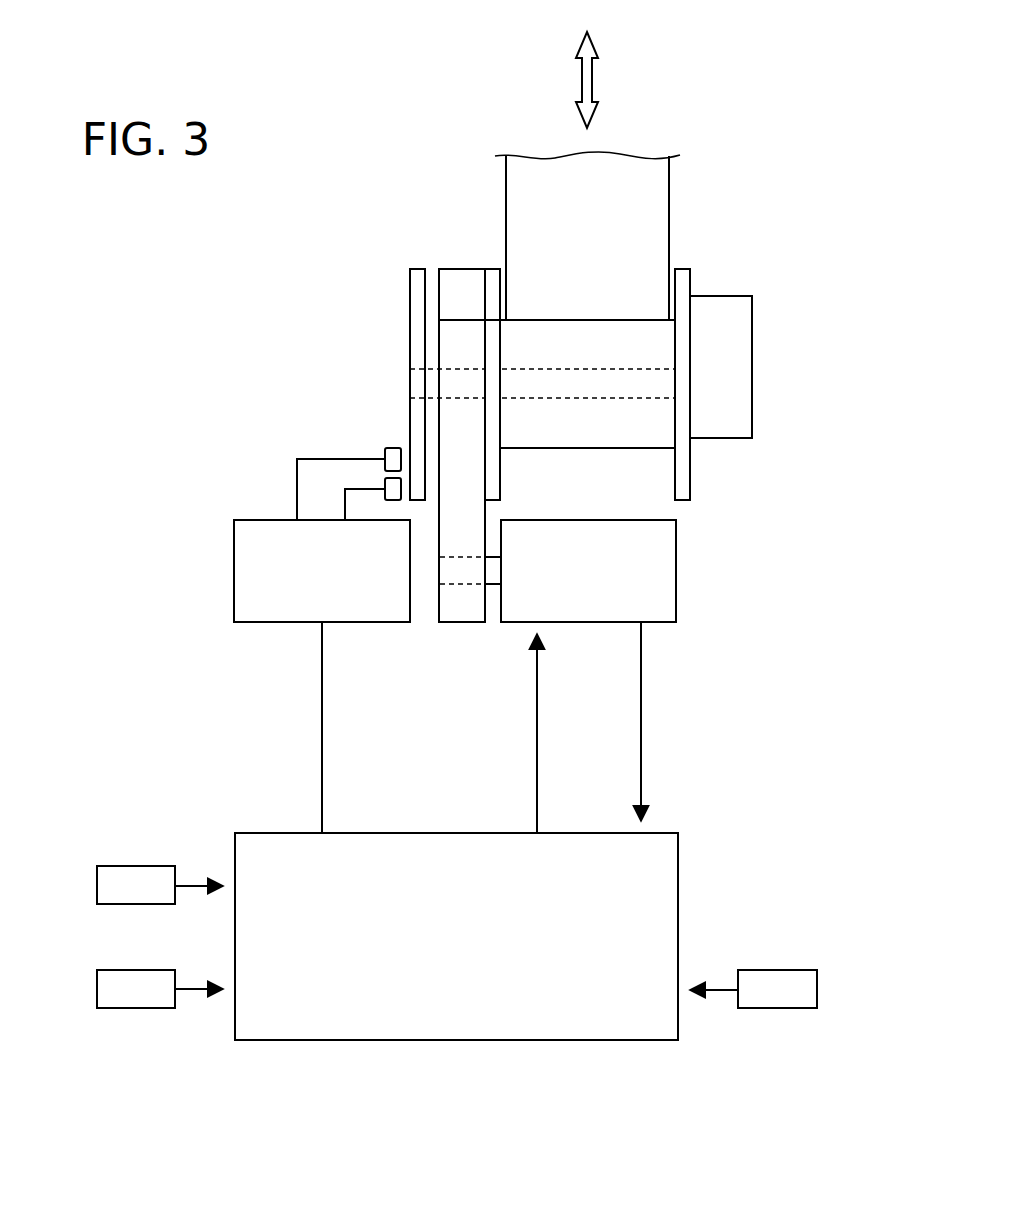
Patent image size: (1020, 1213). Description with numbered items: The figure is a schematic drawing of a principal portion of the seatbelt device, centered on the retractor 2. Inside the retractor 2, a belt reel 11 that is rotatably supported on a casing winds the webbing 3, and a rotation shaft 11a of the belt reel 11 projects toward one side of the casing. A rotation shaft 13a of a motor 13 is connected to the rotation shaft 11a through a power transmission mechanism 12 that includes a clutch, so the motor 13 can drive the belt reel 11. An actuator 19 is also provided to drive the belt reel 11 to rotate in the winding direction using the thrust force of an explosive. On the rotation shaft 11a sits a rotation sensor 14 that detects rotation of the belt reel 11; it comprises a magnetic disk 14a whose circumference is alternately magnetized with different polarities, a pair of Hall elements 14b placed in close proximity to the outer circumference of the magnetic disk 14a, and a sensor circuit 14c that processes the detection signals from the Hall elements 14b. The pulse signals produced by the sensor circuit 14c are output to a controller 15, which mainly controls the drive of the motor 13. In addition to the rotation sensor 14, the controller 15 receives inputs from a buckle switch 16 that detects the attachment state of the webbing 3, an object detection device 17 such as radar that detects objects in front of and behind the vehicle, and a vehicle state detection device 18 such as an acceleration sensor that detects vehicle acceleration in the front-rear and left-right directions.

The retractor 2 is at (720, 188).
The webbing 3 is at (535, 176).
The belt reel 11 is at (692, 475).
The rotation shaft 11a is at (463, 387).
The power transmission mechanism 12 is at (453, 340).
The motor 13 is at (663, 570).
The rotation shaft 13a is at (465, 580).
The rotation sensor 14 is at (208, 503).
The magnetic disk 14a is at (418, 303).
The Hall elements 14b is at (385, 486).
The sensor circuit 14c is at (252, 570).
The controller 15 is at (278, 833).
The buckle switch 16 is at (778, 970).
The object detection device 17 is at (97, 887).
The vehicle state detection device 18 is at (97, 990).
The actuator 19 is at (465, 285).